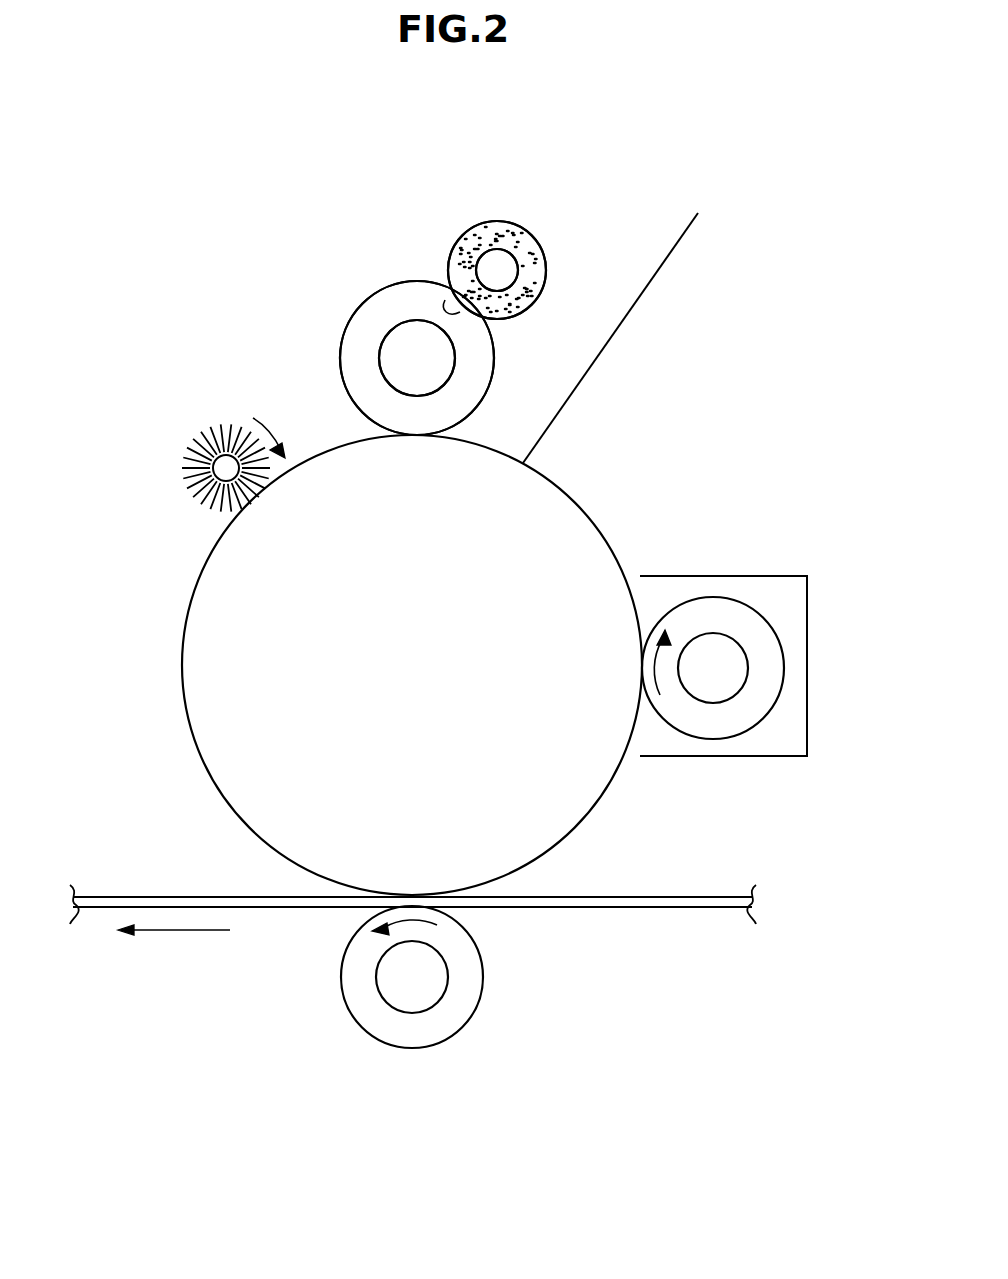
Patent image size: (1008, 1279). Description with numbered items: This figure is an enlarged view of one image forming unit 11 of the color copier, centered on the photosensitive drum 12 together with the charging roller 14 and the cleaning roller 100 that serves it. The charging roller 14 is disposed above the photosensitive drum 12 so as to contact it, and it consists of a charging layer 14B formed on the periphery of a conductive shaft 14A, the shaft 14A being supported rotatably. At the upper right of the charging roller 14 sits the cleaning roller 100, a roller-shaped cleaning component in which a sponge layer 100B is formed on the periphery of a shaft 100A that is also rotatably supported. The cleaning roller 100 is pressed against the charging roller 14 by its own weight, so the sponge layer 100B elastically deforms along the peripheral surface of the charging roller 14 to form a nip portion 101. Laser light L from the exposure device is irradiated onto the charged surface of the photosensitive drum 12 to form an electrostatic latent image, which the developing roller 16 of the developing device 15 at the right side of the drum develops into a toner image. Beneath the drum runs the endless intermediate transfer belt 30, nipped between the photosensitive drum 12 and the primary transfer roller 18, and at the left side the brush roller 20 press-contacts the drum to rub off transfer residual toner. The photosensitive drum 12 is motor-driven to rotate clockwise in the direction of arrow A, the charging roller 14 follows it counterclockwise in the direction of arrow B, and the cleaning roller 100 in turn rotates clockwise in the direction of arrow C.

The image forming unit 11 is at (768, 137).
The photosensitive drum 12 is at (600, 530).
The charging roller 14 is at (253, 212).
The conductive shaft 14A is at (403, 338).
The charging layer 14B is at (353, 335).
The developing device 15 is at (797, 568).
The developing roller 16 is at (755, 707).
The primary transfer roller 18 is at (410, 1033).
The brush roller 20 is at (200, 440).
The intermediate transfer belt 30 is at (110, 897).
The cleaning roller 100 is at (620, 112).
The shaft 100A is at (494, 257).
The sponge layer 100B is at (527, 240).
The nip portion 101 is at (445, 300).
The arrow A is at (450, 462).
The arrow B is at (448, 412).
The arrow C is at (548, 302).
The laser light L is at (643, 293).